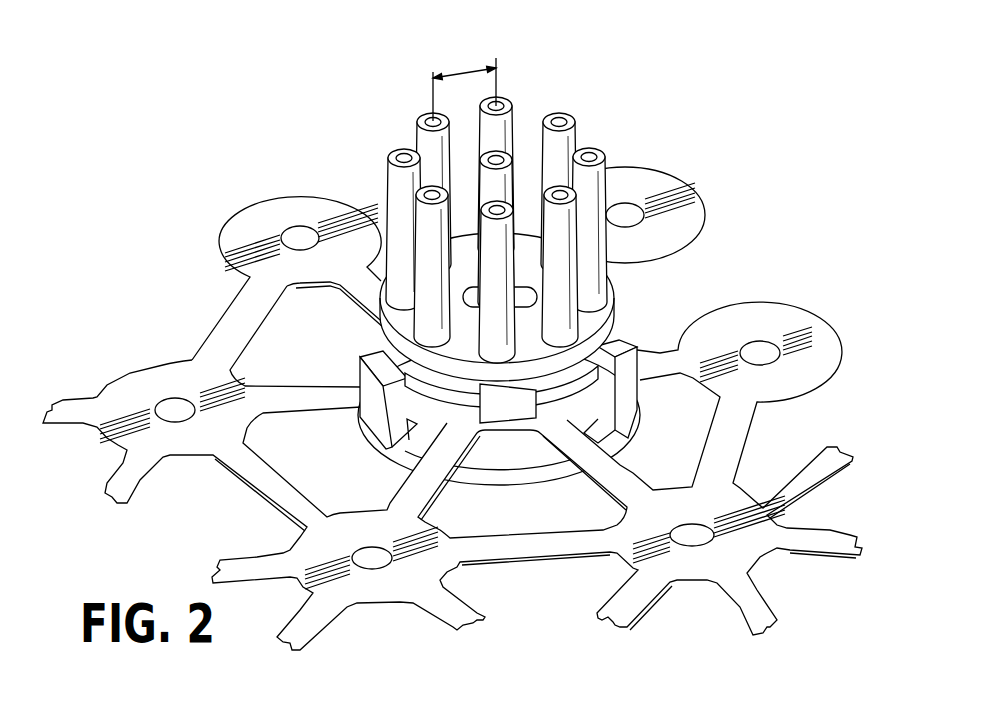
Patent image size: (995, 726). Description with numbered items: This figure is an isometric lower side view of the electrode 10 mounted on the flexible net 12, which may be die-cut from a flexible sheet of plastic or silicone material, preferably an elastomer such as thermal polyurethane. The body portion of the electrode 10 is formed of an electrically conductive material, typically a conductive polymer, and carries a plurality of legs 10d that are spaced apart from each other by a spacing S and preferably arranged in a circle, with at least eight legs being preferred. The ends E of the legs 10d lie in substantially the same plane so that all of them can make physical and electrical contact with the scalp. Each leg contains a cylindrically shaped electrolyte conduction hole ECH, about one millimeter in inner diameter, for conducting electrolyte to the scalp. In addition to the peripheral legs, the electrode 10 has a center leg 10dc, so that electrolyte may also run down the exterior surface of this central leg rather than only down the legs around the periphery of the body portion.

The electrode 10 is at (490, 230).
The legs 10d is at (490, 220).
The center leg 10dc is at (490, 180).
The electrolyte conduction hole ECH is at (593, 150).
The ends of legs E is at (510, 100).
The spacing S is at (463, 72).
The flexible net 12 is at (205, 315).